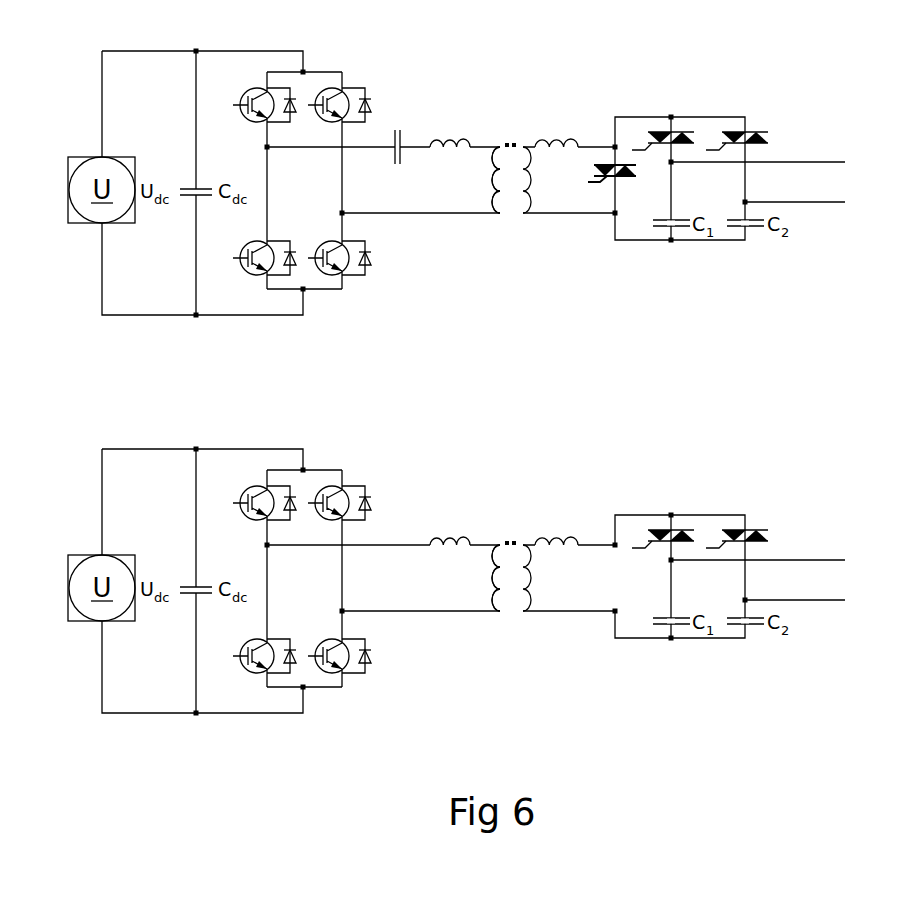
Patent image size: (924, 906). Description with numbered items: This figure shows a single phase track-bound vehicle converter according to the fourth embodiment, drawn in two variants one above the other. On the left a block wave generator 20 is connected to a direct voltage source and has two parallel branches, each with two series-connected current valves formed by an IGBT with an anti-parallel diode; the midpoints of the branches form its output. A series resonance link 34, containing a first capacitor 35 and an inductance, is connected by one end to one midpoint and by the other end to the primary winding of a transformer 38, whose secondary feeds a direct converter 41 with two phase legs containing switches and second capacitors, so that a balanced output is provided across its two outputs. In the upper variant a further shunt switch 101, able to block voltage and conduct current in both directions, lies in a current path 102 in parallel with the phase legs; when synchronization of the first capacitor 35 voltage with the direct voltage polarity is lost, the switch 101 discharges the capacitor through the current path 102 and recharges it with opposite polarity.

The block wave generator 20 is at (342, 290).
The first capacitor 35 is at (398, 123).
The series resonance link 34 is at (451, 199).
The transformer 38 is at (517, 216).
The direct converter 41 is at (630, 243).
The shunt switch 101 is at (667, 228).
The current path 102 is at (617, 195).